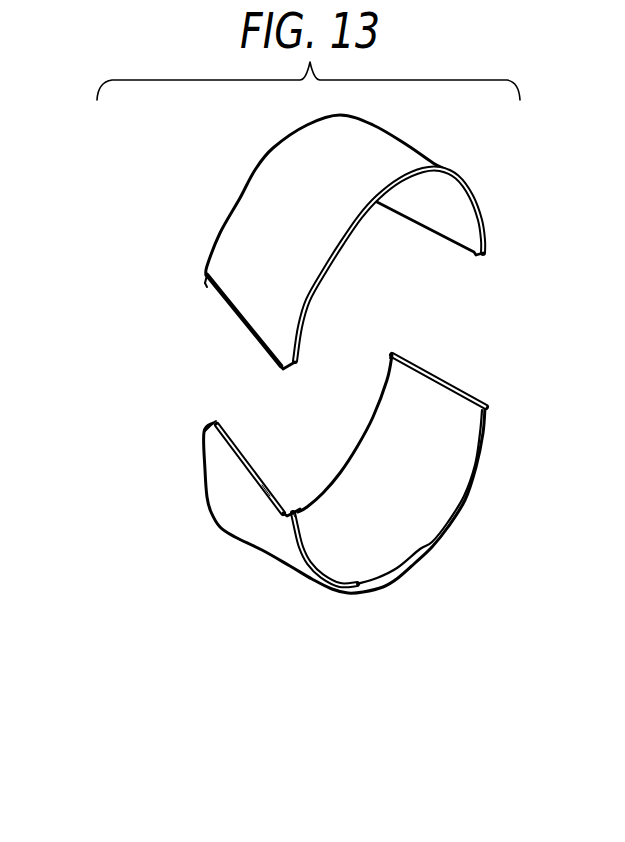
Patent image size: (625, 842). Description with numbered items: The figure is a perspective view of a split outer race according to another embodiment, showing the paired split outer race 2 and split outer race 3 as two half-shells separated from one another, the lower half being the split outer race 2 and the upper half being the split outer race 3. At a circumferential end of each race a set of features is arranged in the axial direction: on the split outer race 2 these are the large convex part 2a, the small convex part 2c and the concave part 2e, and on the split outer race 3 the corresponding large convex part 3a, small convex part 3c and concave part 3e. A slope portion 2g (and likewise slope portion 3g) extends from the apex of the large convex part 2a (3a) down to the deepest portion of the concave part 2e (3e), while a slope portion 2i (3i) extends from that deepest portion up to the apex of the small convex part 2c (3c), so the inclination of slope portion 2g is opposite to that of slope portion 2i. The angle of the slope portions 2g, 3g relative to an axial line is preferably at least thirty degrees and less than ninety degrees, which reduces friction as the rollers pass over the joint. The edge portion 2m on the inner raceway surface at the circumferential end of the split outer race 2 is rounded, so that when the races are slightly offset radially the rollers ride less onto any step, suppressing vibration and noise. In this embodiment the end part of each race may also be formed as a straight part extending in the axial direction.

The split outer race 2 is at (167, 473).
The large convex part 2a is at (211, 422).
The small convex part 2c is at (298, 510).
The concave part 2e is at (291, 494).
The slope portion 2g is at (267, 490).
The slope portion 2i is at (297, 507).
The edge portion 2m is at (250, 463).
The split outer race 3 is at (147, 291).
The large convex part 3a is at (273, 367).
The small convex part 3c is at (205, 273).
The concave part 3e is at (218, 296).
The slope portion 3g is at (247, 333).
The slope portion 3i is at (207, 287).